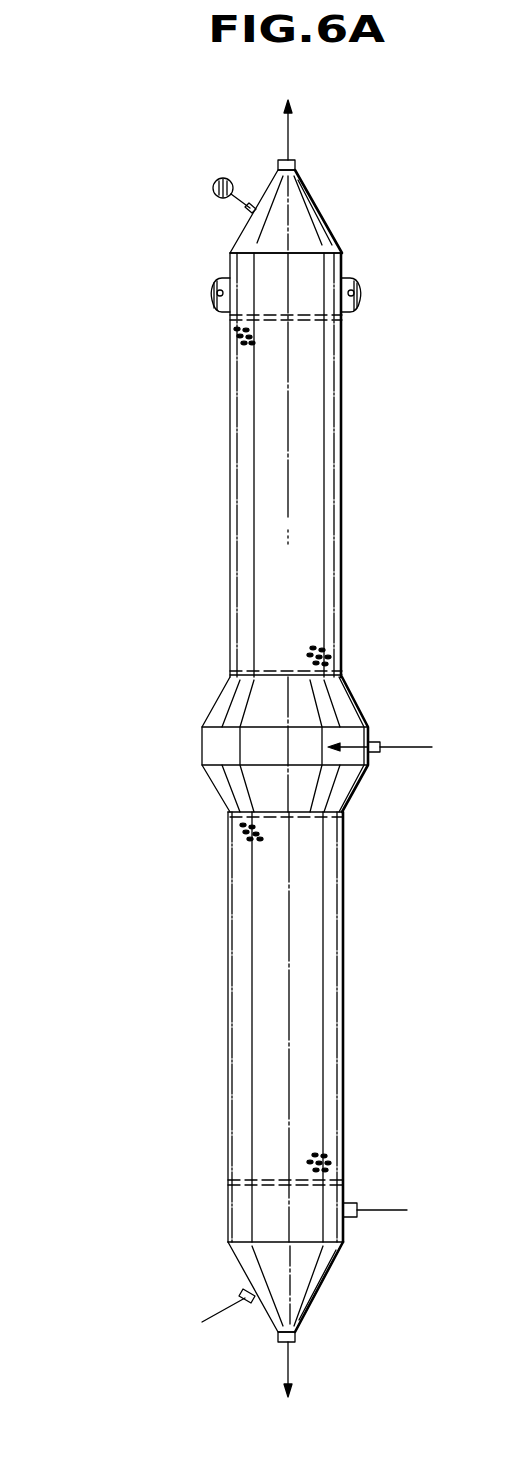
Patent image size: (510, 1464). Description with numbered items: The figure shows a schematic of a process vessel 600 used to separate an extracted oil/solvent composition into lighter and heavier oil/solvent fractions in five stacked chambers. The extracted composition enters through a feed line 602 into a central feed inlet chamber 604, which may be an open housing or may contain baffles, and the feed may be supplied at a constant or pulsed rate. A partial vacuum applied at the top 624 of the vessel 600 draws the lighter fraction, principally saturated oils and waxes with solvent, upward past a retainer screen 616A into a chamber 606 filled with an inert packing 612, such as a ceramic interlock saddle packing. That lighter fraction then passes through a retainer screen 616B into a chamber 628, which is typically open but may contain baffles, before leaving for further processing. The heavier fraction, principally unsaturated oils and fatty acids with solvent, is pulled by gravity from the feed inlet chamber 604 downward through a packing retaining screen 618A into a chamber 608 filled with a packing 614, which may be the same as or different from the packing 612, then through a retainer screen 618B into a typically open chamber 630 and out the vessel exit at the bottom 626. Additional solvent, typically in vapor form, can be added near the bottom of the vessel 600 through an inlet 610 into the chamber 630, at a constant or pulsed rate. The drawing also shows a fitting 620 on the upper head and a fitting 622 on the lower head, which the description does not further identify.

The process vessel 600 is at (104, 462).
The feed line 602 is at (400, 750).
The central feed inlet chamber 604 is at (236, 757).
The upper packed chamber 606 is at (240, 447).
The lower packed chamber 608 is at (247, 1018).
The solvent inlet 610 is at (385, 1213).
The packing 612 is at (238, 336).
The packing 614 is at (241, 838).
The retainer screen 616A is at (345, 686).
The retainer screen 616B is at (343, 327).
The packing retaining screen 618A is at (325, 818).
The retainer screen 618B is at (345, 1187).
The top instrument fitting 620 is at (216, 180).
The bottom side fitting 622 is at (224, 1318).
The top of vessel 624 is at (290, 133).
The vessel exit 626 is at (290, 1365).
The upper open chamber 628 is at (320, 278).
The lower open chamber 630 is at (267, 1216).